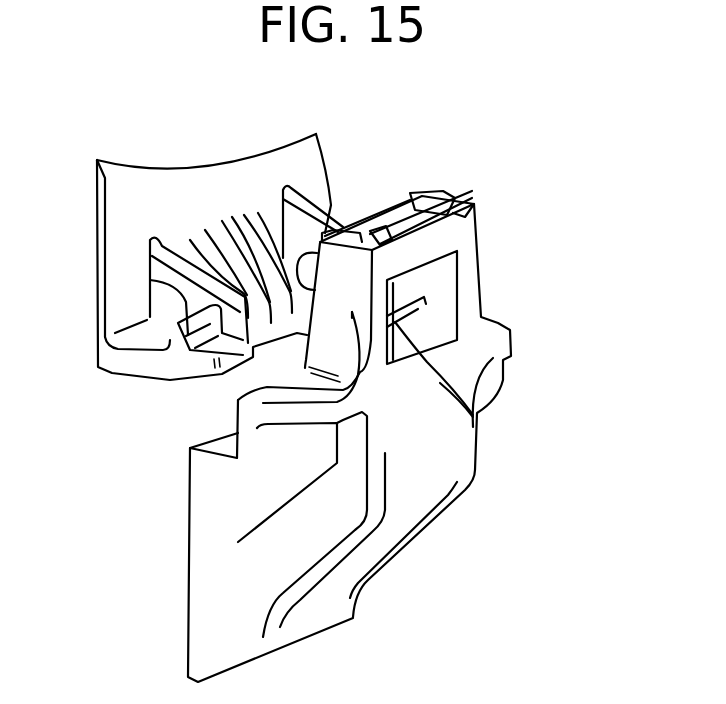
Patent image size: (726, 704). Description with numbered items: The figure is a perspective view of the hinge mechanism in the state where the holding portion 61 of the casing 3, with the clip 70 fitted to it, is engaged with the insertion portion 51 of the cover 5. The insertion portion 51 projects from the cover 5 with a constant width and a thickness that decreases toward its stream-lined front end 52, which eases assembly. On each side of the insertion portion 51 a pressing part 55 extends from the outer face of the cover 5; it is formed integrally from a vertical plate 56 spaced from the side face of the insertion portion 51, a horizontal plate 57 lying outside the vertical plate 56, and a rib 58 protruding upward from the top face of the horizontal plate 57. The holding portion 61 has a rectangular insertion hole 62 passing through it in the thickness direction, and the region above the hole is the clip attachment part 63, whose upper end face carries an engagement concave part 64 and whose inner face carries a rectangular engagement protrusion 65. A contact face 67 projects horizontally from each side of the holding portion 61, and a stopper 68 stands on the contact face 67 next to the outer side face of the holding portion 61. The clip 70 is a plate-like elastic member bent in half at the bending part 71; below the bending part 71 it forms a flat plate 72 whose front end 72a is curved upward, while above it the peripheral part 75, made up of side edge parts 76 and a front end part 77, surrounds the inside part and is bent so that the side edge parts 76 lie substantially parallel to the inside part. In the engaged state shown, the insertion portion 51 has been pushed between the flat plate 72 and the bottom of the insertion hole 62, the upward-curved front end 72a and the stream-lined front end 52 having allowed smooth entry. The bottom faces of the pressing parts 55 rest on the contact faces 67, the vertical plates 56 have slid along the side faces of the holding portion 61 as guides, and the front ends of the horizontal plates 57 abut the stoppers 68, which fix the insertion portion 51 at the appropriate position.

The casing 3 is at (185, 563).
The cover 5 is at (210, 170).
The insertion portion 51 is at (265, 240).
The front end of the insertion portion 52 is at (286, 326).
The pressing part 55 is at (165, 306).
The vertical plate 56 is at (160, 245).
The horizontal plate 57 is at (143, 337).
The rib 58 is at (153, 280).
The holding portion 61 is at (495, 222).
The insertion hole 62 is at (450, 296).
The clip attachment part 63 is at (480, 208).
The engagement concave part 64 is at (476, 242).
The engagement protrusion 65 is at (380, 213).
The contact face 67 is at (305, 368).
The stopper 68 is at (360, 370).
The clip 70 is at (423, 180).
The bending part 71 is at (318, 240).
The flat plate 72 is at (420, 306).
The front end of the flat plate 72a is at (473, 416).
The peripheral part 75 is at (430, 188).
The side edge part 76 is at (353, 228).
The front end part 77 is at (397, 213).